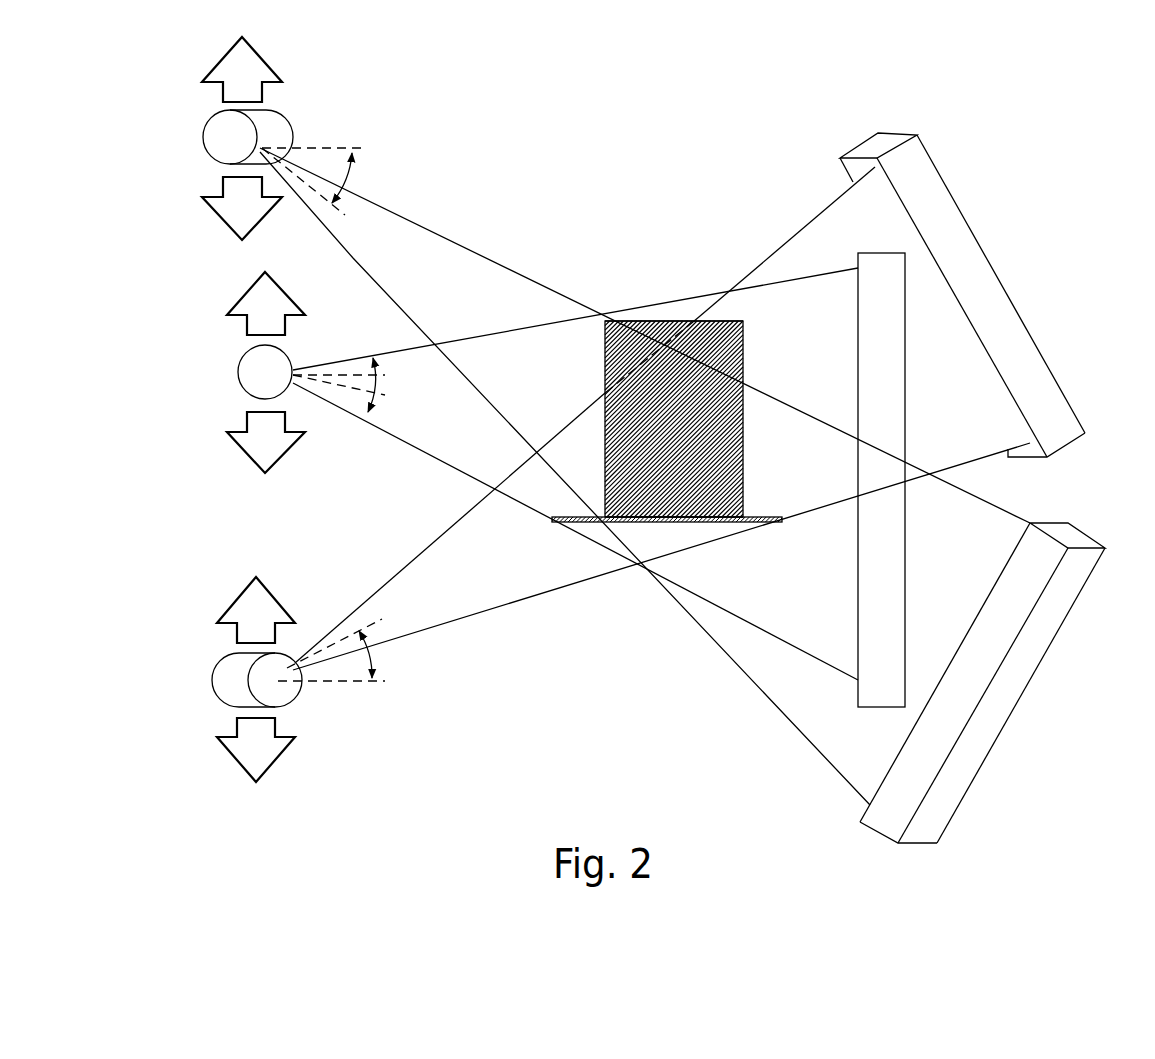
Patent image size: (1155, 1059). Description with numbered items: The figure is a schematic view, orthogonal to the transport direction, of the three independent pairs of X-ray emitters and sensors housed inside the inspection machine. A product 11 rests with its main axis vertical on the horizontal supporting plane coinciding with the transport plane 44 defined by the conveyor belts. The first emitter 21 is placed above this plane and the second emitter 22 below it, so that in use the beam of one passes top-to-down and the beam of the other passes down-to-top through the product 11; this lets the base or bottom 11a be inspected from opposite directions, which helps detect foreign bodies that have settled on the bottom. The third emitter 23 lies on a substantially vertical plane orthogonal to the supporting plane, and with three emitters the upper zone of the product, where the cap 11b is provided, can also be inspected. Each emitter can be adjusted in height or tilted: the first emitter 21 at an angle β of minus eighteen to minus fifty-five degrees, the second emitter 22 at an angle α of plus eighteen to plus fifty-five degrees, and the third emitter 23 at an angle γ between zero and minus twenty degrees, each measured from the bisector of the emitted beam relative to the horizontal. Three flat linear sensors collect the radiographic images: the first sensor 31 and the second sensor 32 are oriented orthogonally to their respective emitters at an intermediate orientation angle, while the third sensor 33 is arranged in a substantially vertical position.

The first X-ray emitter 21 is at (208, 137).
The second X-ray emitter 22 is at (217, 678).
The third X-ray emitter 23 is at (255, 362).
The product 11 is at (733, 455).
The base or bottom of the product 11a is at (727, 520).
The cap 11b is at (734, 321).
The transport plane 44 is at (557, 520).
The first sensor 31 is at (1020, 677).
The second sensor 32 is at (985, 267).
The third sensor 33 is at (898, 565).